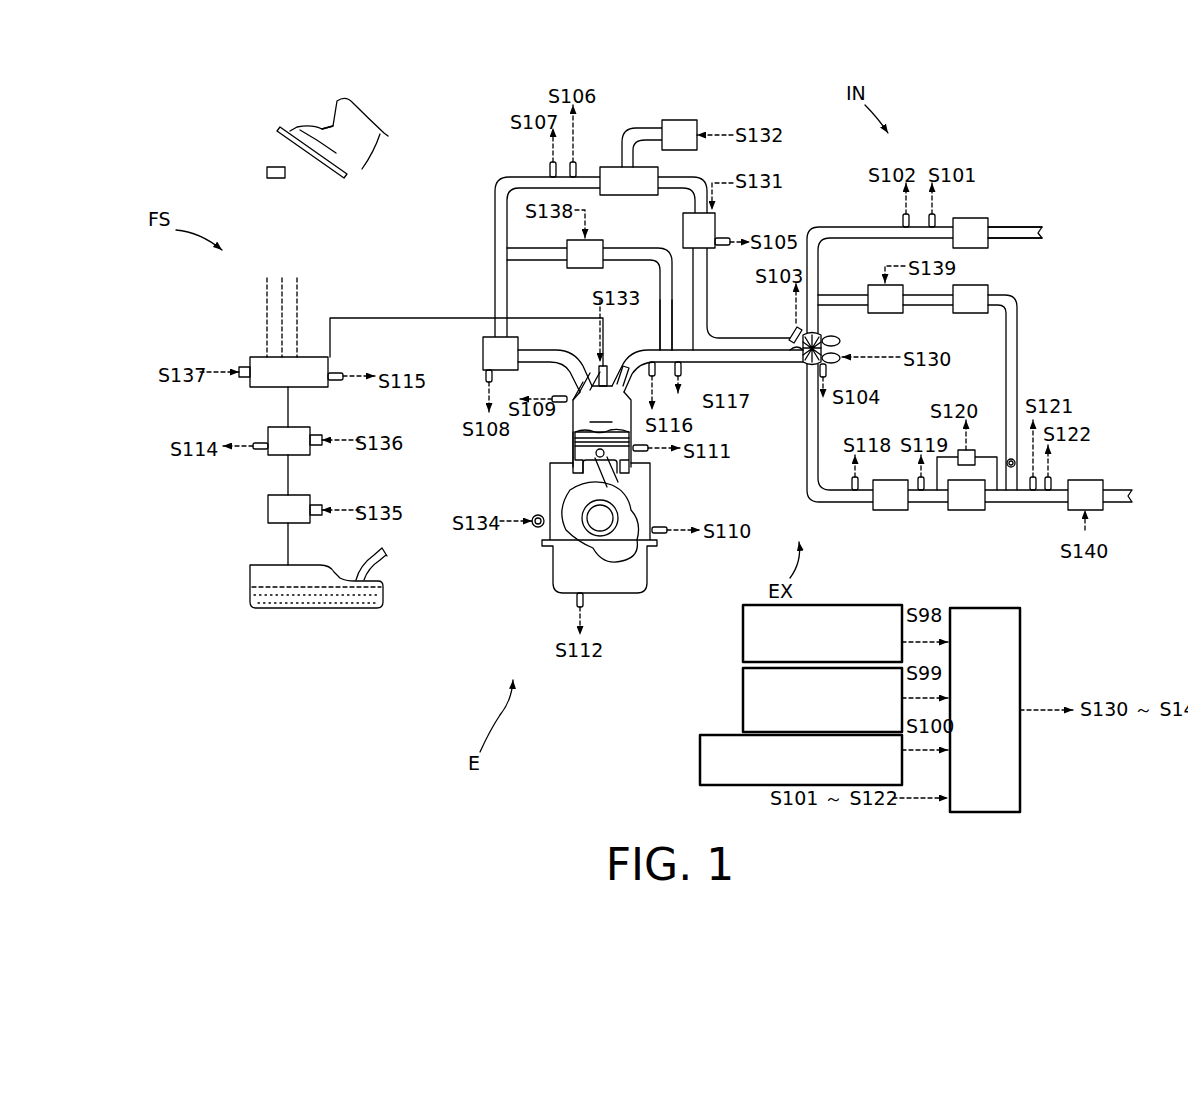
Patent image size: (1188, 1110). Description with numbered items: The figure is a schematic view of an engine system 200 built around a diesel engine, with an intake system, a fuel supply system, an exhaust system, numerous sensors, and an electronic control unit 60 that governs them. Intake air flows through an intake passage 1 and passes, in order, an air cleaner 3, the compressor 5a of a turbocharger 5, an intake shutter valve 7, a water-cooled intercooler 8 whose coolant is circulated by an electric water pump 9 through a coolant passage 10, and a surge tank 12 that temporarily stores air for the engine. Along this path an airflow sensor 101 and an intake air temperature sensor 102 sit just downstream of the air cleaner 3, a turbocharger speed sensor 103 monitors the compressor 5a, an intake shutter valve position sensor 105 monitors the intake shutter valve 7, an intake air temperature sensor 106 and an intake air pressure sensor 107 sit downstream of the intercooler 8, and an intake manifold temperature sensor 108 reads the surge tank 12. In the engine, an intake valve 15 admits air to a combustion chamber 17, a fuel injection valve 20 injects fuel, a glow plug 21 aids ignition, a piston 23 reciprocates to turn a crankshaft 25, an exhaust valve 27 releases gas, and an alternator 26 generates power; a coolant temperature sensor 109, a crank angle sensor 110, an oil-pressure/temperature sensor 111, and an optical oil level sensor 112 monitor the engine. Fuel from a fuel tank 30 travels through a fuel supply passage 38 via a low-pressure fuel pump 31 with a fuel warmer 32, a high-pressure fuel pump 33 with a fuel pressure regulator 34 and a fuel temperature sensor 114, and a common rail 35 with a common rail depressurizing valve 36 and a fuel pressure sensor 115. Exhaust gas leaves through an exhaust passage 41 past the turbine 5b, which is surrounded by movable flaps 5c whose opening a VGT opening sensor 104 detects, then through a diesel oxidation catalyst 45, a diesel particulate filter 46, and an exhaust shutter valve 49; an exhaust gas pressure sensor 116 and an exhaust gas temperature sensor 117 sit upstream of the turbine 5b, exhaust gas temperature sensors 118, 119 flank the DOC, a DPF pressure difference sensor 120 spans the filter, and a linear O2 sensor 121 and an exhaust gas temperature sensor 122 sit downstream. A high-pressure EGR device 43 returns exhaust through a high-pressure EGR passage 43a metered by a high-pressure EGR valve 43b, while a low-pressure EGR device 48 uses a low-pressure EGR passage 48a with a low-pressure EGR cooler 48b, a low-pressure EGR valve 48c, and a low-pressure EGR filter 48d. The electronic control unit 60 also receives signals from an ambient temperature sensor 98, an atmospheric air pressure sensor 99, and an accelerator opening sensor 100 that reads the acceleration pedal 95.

The intake passage 1 is at (495, 222).
The air cleaner 3 is at (990, 228).
The turbocharger 5 is at (842, 345).
The compressor 5a is at (824, 338).
The turbine 5b is at (808, 370).
The movable flaps 5c is at (800, 356).
The intake shutter valve 7 is at (683, 232).
The water-cooled intercooler 8 is at (615, 167).
The electric water pump 9 is at (680, 120).
The coolant passage 10 is at (640, 140).
The surge tank 12 is at (483, 356).
The intake valve 15 is at (574, 390).
The combustion chamber 17 is at (602, 429).
The fuel injection valve 20 is at (597, 370).
The glow plug 21 is at (582, 375).
The piston 23 is at (573, 458).
The crankshaft 25 is at (600, 520).
The alternator 26 is at (536, 530).
The exhaust valve 27 is at (624, 372).
The fuel tank 30 is at (250, 578).
The low-pressure fuel pump 31 is at (268, 509).
The fuel warmer 32 is at (318, 516).
The high-pressure fuel pump 33 is at (310, 430).
The fuel pressure regulator 34 is at (320, 446).
The common rail 35 is at (250, 385).
The common rail depressurizing valve 36 is at (250, 358).
The fuel supply passage 38 is at (405, 318).
The exhaust passage 41 is at (750, 362).
The high-pressure EGR device 43 is at (562, 292).
The high-pressure EGR passage 43a is at (660, 288).
The high-pressure EGR valve 43b is at (600, 240).
The diesel oxidation catalyst 45 is at (890, 510).
The diesel particulate filter 46 is at (965, 510).
The low-pressure EGR device 48 is at (1025, 280).
The low-pressure EGR passage 48a is at (1017, 340).
The low-pressure EGR cooler 48b is at (968, 313).
The low-pressure EGR valve 48c is at (868, 290).
The low-pressure EGR filter 48d is at (1010, 468).
The exhaust shutter valve 49 is at (1100, 510).
The electronic control unit 60 is at (1020, 632).
The acceleration pedal 95 is at (283, 136).
The ambient temperature sensor 98 is at (743, 643).
The atmospheric air pressure sensor 99 is at (743, 699).
The accelerator opening sensor 100 is at (267, 172).
The airflow sensor 101 is at (936, 212).
The intake air temperature sensor 102 is at (903, 218).
The turbocharger speed sensor 103 is at (790, 338).
The VGT opening sensor 104 is at (828, 372).
The intake shutter valve position sensor 105 is at (725, 240).
The intake air temperature sensor 106 is at (578, 165).
The intake air pressure sensor 107 is at (550, 170).
The intake manifold temperature sensor 108 is at (486, 375).
The coolant temperature sensor 109 is at (560, 403).
The crank angle sensor 110 is at (660, 535).
The oil-pressure/temperature sensor 111 is at (648, 452).
The optical oil level sensor 112 is at (577, 600).
The fuel temperature sensor 114 is at (258, 443).
The fuel pressure sensor 115 is at (340, 372).
The exhaust gas pressure sensor 116 is at (652, 365).
The exhaust gas temperature sensor 117 is at (682, 368).
The exhaust gas temperature sensor 118 is at (853, 490).
The exhaust gas temperature sensor 119 is at (925, 490).
The DPF pressure difference sensor 120 is at (968, 450).
The linear O2 sensor 121 is at (1033, 490).
The exhaust gas temperature sensor 122 is at (1052, 480).
The engine system 200 is at (1104, 158).